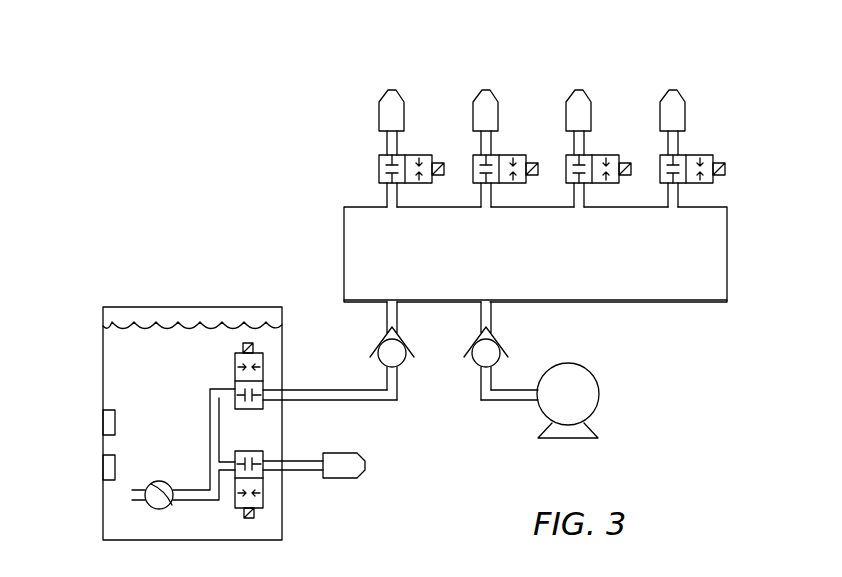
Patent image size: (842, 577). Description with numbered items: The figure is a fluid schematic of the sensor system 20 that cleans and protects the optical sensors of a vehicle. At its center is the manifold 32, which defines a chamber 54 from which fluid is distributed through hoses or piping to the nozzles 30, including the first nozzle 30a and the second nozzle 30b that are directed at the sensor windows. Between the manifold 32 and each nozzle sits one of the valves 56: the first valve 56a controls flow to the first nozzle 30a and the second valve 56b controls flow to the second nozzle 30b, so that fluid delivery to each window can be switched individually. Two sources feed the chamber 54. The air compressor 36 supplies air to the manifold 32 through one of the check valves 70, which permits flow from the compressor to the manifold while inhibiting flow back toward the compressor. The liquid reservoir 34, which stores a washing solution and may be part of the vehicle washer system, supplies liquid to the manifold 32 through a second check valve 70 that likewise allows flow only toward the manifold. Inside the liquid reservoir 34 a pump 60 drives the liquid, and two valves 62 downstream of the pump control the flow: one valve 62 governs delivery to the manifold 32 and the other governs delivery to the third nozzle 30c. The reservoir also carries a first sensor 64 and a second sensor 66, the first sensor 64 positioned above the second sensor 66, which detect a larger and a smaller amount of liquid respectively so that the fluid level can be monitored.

The sensor system 20 is at (665, 66).
The first nozzle 30a is at (379, 108).
The second nozzle 30b is at (473, 108).
The nozzle 30 is at (566, 108).
The third nozzle 30c is at (348, 478).
The manifold 32 is at (727, 222).
The chamber 54 is at (552, 262).
The first valve 56a is at (379, 165).
The second valve 56b is at (473, 165).
The valve 56 is at (566, 165).
The check valve 70 is at (407, 365).
The air compressor 36 is at (600, 392).
The liquid reservoir 34 is at (103, 345).
The first sensor 64 is at (103, 422).
The second sensor 66 is at (103, 470).
The pump 60 is at (158, 481).
The valve 62 is at (263, 367).